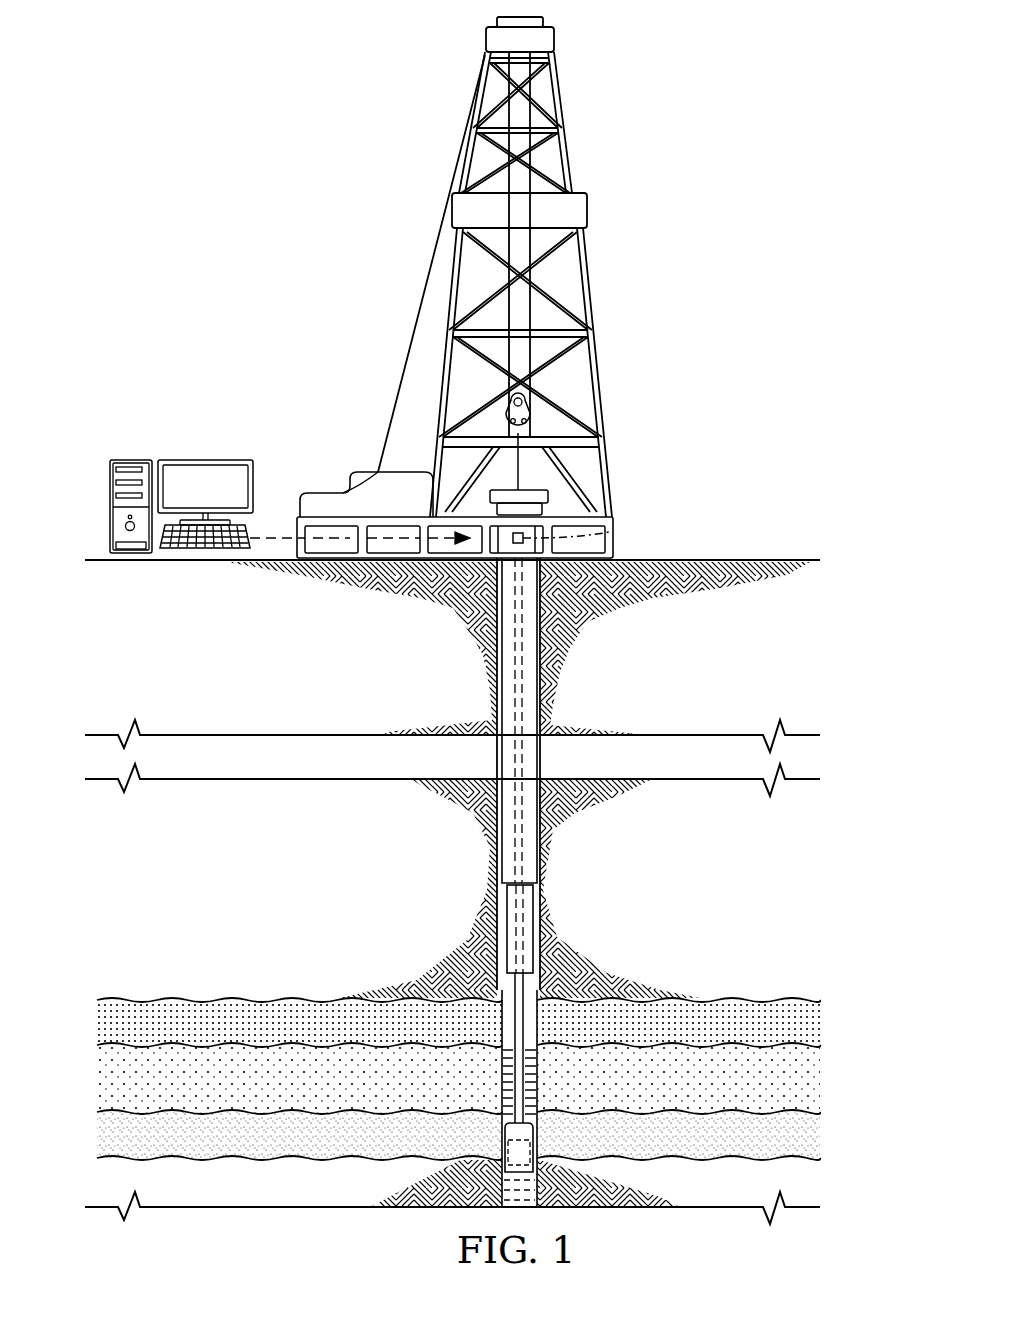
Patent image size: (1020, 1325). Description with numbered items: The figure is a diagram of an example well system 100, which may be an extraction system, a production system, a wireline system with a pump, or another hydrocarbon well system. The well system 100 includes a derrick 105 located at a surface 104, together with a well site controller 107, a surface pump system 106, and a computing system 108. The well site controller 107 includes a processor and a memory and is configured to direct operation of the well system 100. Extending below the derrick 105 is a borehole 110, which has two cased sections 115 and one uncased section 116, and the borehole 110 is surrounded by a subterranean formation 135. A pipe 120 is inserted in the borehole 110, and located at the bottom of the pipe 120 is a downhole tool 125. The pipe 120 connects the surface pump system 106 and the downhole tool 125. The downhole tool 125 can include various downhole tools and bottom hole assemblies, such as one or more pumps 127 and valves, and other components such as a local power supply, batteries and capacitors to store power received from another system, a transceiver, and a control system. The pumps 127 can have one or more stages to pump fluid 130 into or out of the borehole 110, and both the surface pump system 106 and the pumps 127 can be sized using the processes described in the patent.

The well system 100 is at (358, 56).
The surface 104 is at (730, 560).
The derrick 105 is at (568, 165).
The surface pump system 106 is at (612, 531).
The well site controller 107 is at (472, 550).
The computing system 108 is at (110, 507).
The borehole 110 is at (497, 862).
The cased sections 115 is at (537, 832).
The uncased section 116 is at (493, 992).
The pipe 120 is at (502, 1087).
The downhole tool 125 is at (505, 1145).
The pumps 127 is at (533, 1147).
The fluid 130 is at (537, 1080).
The subterranean formation 135 is at (208, 968).